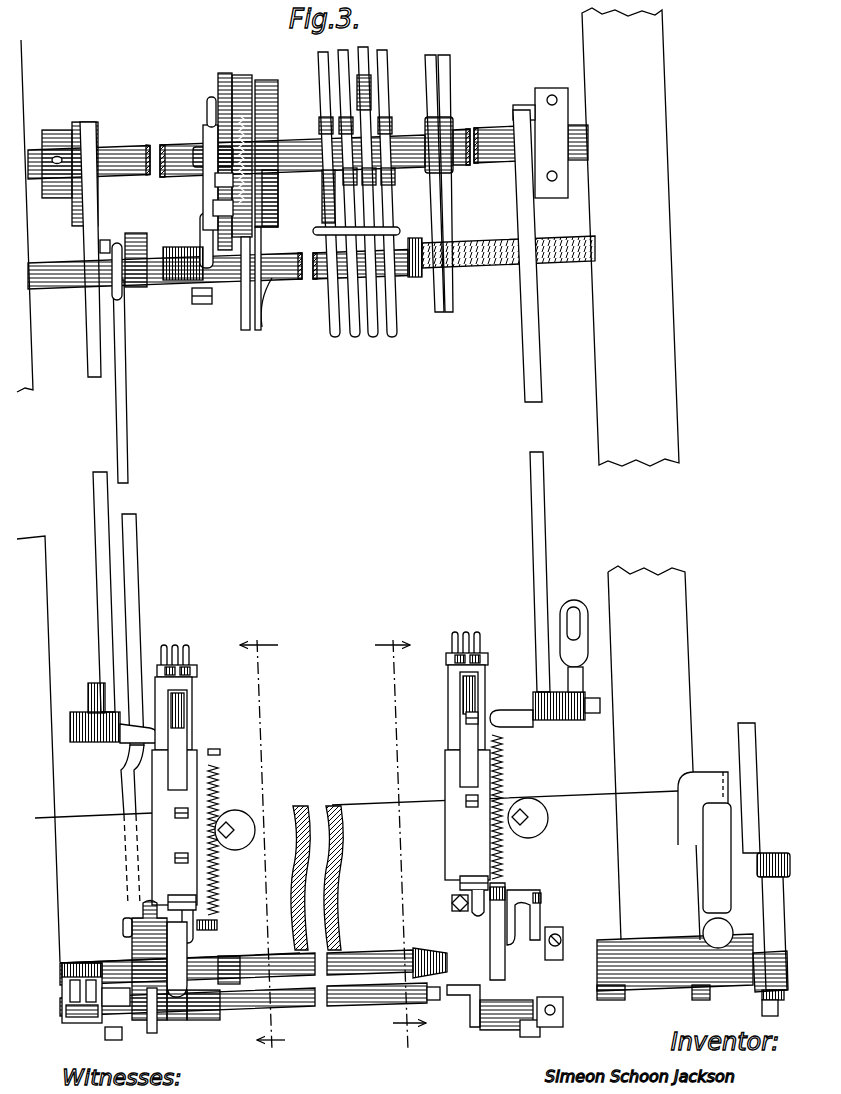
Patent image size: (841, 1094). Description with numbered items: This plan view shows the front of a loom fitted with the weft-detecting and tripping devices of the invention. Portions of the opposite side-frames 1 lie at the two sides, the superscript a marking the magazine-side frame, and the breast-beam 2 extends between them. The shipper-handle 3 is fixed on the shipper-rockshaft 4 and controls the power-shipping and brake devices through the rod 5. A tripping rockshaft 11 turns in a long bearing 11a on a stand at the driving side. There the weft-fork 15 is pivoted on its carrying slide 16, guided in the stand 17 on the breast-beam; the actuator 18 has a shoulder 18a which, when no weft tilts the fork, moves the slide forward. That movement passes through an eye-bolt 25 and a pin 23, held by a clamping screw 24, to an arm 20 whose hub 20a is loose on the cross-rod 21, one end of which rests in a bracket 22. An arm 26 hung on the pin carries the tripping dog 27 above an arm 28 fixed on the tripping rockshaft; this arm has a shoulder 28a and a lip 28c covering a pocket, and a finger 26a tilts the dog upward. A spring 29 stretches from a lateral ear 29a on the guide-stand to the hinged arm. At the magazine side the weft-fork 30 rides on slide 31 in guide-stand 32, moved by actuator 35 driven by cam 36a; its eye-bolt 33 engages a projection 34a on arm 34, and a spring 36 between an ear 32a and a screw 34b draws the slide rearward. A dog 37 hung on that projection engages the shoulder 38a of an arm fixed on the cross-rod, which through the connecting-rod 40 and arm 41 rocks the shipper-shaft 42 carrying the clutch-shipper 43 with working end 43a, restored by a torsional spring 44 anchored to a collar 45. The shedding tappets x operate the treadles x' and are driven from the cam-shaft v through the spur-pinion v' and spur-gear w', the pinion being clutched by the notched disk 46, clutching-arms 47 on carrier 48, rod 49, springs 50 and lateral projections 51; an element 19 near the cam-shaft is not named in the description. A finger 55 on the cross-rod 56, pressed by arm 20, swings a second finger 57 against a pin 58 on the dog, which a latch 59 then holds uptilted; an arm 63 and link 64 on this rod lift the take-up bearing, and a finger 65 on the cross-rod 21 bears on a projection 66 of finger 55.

The side-frame 1 is at (668, 302).
The breast-beam 2 is at (268, 810).
The shipper-handle 3 is at (700, 925).
The shipper-rockshaft 4 is at (400, 833).
The rod 5 is at (262, 843).
The tripping rockshaft 11 is at (760, 940).
The long bearing 11a is at (642, 938).
The weft-fork 15 is at (463, 632).
The carrying slide 16 is at (450, 694).
The guide-stand 17 is at (448, 782).
The actuator 18 is at (525, 386).
The shoulder 18a is at (470, 733).
The bearing bracket 19 is at (518, 108).
The arm 20 is at (462, 942).
The hub 20a is at (465, 990).
The cross-rod or shaft 21 is at (303, 956).
The bracket 22 is at (78, 1022).
The pin 23 is at (547, 897).
The clamping screw 24 is at (462, 907).
The eye-bolt 25 is at (470, 924).
The arm 26 is at (540, 935).
The finger 26a is at (522, 1020).
The tripping dog 27 is at (535, 1023).
The arm 28 is at (565, 940).
The shoulder 28a is at (563, 1000).
The lip 28c is at (565, 952).
The contracting spiral spring 29 is at (515, 860).
The lateral ear 29a is at (508, 738).
The weft-detector 30 is at (176, 652).
The carrying-slide 31 is at (196, 718).
The guide-stand 32 is at (156, 823).
The fixed ear 32a is at (222, 754).
The eye-bolt 33 is at (185, 918).
The arm 34 is at (182, 953).
The projection 34a is at (123, 925).
The screw 34b is at (222, 925).
The actuator 35 is at (92, 340).
The contracting spiral spring 36 is at (218, 795).
The actuating cam 36a is at (98, 136).
The dog 37 is at (134, 953).
The shoulder 38a is at (140, 1005).
The connecting-rod 40 is at (128, 458).
The arm 41 is at (134, 242).
The shipper-shaft 42 is at (298, 273).
The clutch-shipper 43 is at (183, 263).
The working end 43a is at (200, 228).
The torsional spiral spring 44 is at (465, 244).
The collar 45 is at (206, 243).
The disk 46 is at (228, 183).
The clutching-arms 47 is at (222, 90).
The carrier 48 is at (252, 74).
The rod 49 is at (212, 203).
The contracting spiral springs 50 is at (205, 150).
The lateral projections 51 is at (200, 153).
The finger 55 is at (472, 1028).
The cross-rod or shaft 56 is at (294, 1000).
The second finger 57 is at (216, 1004).
The pin 58 is at (195, 1020).
The latch 59 is at (140, 1013).
The arm 63 is at (776, 910).
The link 64 is at (775, 855).
The finger 65 is at (413, 958).
The projection 66 is at (452, 988).
The side-frame a is at (30, 360).
The cam-shaft v is at (434, 136).
The spur-pinion v' is at (282, 168).
The spur-gear w' is at (284, 153).
The shed-forming tappets or cams x is at (356, 192).
The treadles or levers x' is at (379, 357).